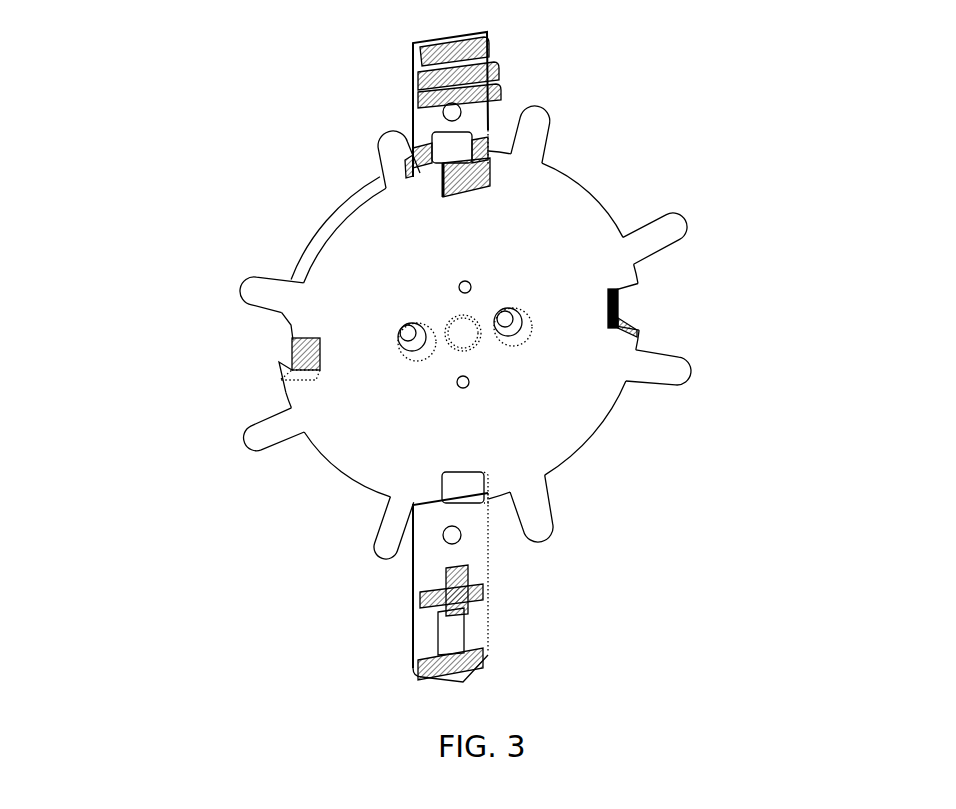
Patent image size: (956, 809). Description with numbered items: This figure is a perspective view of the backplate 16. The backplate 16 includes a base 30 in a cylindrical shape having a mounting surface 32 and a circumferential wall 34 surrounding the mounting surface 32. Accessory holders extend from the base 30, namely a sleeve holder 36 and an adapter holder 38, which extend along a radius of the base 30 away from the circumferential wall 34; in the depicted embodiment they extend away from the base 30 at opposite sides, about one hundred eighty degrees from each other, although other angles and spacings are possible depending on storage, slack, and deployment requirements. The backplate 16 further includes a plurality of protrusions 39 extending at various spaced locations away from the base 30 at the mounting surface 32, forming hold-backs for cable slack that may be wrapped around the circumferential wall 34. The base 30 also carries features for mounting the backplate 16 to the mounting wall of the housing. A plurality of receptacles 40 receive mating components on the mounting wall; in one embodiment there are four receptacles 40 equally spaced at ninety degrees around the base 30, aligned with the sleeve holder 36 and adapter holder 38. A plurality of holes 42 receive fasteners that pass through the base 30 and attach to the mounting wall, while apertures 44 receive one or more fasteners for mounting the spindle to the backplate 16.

The backplate 16 is at (137, 127).
The base 30 is at (594, 428).
The mounting surface 32 is at (543, 220).
The circumferential wall 34 is at (337, 230).
The sleeve holder 36 is at (413, 80).
The adapter holder 38 is at (477, 643).
The protrusions 39 is at (390, 147).
The receptacles 40 is at (460, 170).
The holes 42 is at (533, 322).
The apertures 44 is at (459, 285).